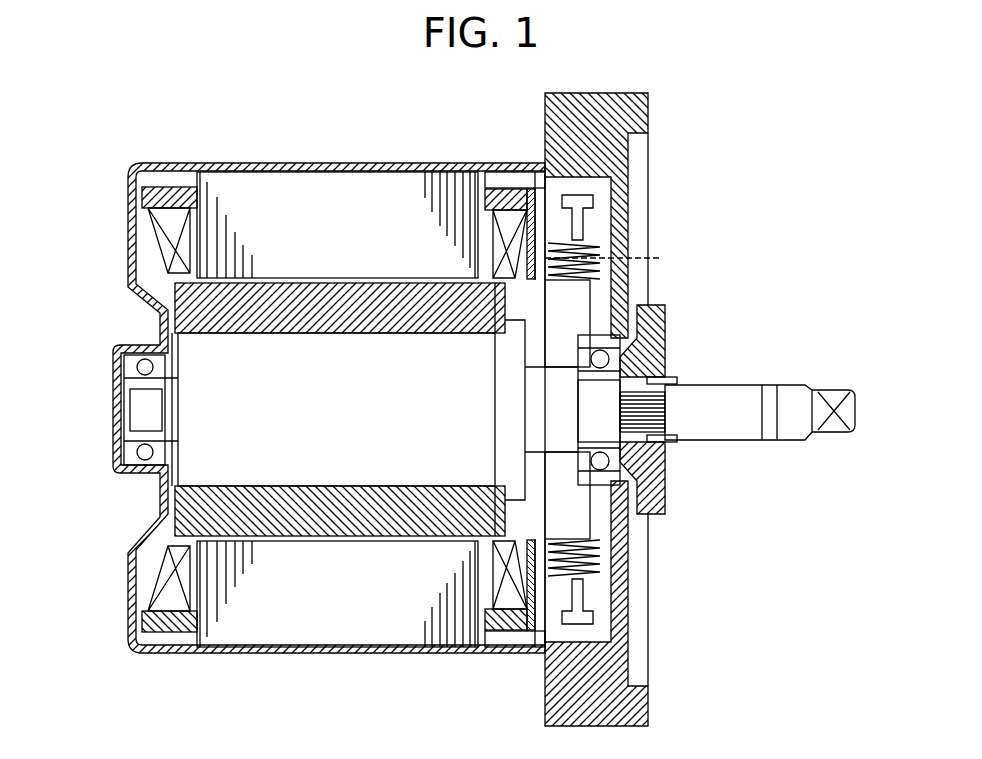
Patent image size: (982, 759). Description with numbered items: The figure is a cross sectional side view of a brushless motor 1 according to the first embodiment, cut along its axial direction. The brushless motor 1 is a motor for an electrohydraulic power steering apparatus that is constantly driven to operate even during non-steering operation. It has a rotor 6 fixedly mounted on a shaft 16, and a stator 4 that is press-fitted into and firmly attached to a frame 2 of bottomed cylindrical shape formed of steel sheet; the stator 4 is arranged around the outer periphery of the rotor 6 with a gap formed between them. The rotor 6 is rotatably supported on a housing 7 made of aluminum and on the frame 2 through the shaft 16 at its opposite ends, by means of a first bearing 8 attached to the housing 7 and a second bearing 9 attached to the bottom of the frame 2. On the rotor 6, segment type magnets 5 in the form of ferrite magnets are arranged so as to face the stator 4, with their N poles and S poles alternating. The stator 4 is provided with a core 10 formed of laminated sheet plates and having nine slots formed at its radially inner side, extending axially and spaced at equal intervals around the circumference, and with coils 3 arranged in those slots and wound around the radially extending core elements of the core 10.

The brushless motor 1 is at (680, 184).
The frame 2 is at (228, 163).
The coils 3 is at (150, 244).
The stator 4 is at (336, 200).
The segment type magnets 5 is at (330, 520).
The rotor 6 is at (298, 482).
The housing 7 is at (597, 670).
The first bearing 8 is at (600, 468).
The second bearing 9 is at (140, 458).
The core 10 is at (276, 215).
The shaft 16 is at (740, 385).